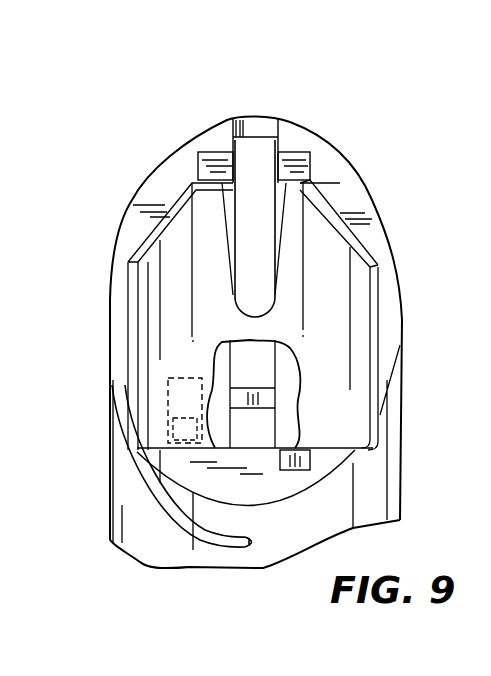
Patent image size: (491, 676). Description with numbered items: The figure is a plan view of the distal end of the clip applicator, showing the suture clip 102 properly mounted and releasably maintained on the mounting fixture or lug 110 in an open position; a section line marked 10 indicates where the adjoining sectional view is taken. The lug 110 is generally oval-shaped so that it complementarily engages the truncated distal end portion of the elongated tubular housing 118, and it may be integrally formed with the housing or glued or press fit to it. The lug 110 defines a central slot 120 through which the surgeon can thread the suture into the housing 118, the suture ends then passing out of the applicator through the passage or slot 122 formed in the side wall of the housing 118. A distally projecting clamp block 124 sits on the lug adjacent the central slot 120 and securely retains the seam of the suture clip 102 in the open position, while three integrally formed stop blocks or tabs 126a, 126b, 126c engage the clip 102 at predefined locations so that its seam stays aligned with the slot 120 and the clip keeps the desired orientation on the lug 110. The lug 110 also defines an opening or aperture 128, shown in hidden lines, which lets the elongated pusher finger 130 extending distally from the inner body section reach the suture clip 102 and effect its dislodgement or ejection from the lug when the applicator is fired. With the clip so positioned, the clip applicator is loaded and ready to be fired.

The section line 10- 10 is at (255, 112).
The suture clip 102 is at (176, 225).
The mounting fixture or lug 110 is at (333, 172).
The elongated tubular housing 118 is at (137, 536).
The central slot 120 is at (290, 208).
The passage or slot 122 is at (153, 566).
The clamp block 124 is at (247, 390).
The stop block or tab 126a is at (200, 166).
The stop block or tab 126b is at (297, 158).
The stop block or tab 126c is at (298, 452).
The opening or aperture 128 is at (182, 398).
The pusher finger 130 is at (170, 458).